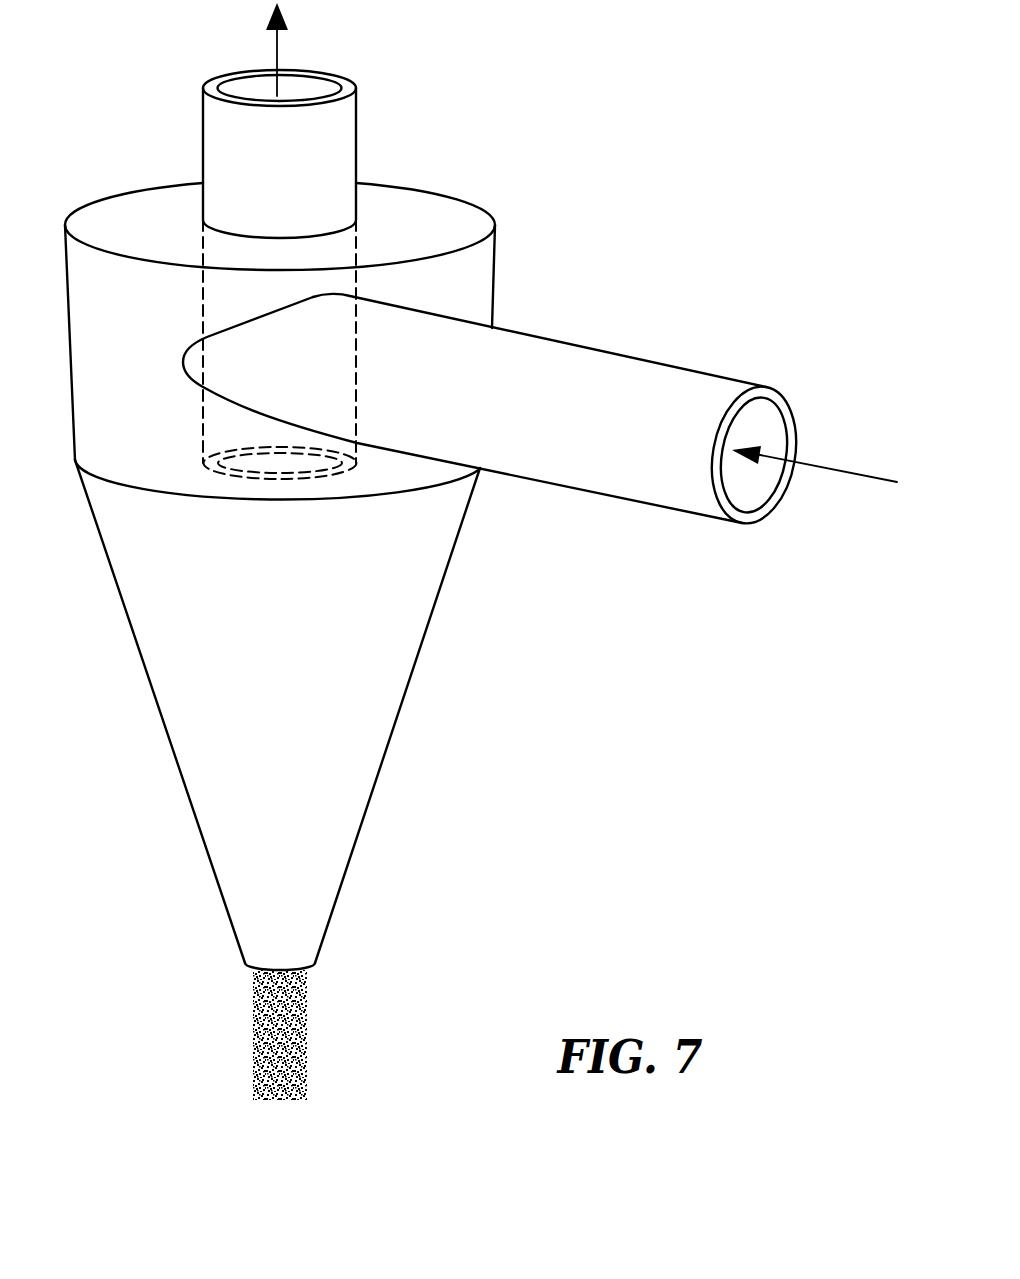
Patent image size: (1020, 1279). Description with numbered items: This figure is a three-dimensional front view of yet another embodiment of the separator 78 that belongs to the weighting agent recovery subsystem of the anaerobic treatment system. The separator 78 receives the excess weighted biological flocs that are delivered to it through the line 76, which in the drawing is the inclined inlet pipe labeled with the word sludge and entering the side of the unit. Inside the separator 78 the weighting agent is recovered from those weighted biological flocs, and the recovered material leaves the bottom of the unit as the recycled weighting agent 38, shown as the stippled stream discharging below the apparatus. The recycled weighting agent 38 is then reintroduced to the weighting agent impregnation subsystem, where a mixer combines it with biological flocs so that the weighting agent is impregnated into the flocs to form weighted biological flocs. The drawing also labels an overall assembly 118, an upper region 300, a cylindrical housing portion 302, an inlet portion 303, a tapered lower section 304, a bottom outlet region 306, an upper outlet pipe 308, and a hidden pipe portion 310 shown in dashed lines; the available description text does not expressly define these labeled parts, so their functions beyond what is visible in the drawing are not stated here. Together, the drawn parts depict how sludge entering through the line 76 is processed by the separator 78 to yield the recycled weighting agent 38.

The separator 78 is at (537, 75).
The cyclone separator assembly 118 is at (543, 197).
The cyclone separator top 300 is at (443, 190).
The cylindrical housing 302 is at (492, 262).
The outlet pipe / wall 308 is at (332, 75).
The vortex finder (hidden portion of outlet pipe) 310 is at (203, 298).
The inlet pipe 303 is at (540, 412).
The line 76 is at (697, 380).
The conical section 304 is at (449, 644).
The bottom outlet 306 is at (308, 968).
The recycled weighting agent 38 is at (306, 1070).